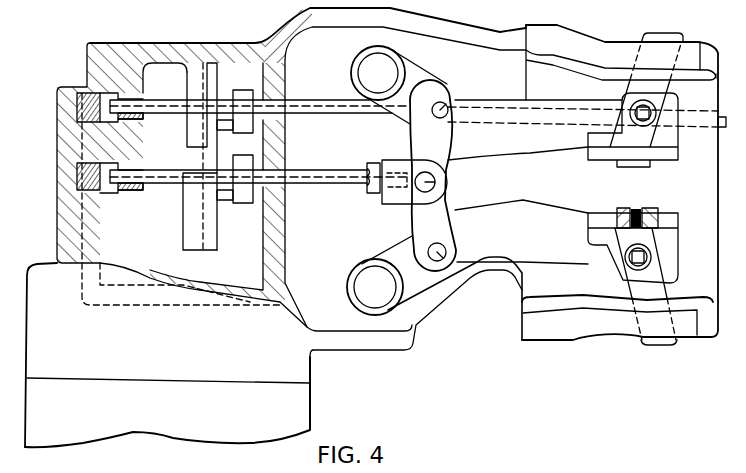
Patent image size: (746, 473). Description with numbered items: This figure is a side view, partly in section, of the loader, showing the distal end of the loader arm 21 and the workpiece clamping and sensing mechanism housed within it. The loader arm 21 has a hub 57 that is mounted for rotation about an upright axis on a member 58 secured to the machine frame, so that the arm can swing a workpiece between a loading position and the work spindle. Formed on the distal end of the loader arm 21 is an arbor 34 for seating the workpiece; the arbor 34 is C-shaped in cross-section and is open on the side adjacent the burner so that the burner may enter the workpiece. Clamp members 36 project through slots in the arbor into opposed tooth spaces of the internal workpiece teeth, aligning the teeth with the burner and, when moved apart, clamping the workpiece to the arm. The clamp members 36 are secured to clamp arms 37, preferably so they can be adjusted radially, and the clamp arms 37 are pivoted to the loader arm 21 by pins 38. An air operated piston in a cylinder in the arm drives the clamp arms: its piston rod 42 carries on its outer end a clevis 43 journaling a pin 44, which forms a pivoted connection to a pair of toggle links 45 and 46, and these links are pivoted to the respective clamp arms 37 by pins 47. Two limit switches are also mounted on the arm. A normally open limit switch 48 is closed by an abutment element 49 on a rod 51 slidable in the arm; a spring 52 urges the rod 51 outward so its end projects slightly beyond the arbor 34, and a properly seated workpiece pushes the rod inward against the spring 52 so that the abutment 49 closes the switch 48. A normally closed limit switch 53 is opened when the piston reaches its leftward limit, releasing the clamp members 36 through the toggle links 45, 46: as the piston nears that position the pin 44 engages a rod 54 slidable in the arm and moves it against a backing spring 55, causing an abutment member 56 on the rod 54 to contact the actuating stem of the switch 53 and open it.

The loader arm 21 is at (418, 323).
The arbor 34 is at (570, 339).
The clamp members 36 is at (670, 38).
The clamp arms 37 is at (541, 146).
The pins 38 is at (378, 73).
The piston rod 42 is at (375, 190).
The clevis 43 is at (402, 203).
The pin 44 is at (446, 183).
The toggle link 45 is at (420, 138).
The toggle link 46 is at (405, 239).
The pins 47 is at (446, 104).
The limit switch 48 is at (193, 141).
The abutment element 49 is at (240, 91).
The rod 51 is at (360, 113).
The spring 52 is at (86, 92).
The limit switch 53 is at (207, 245).
The rod 54 is at (327, 183).
The backing spring 55 is at (100, 190).
The abutment member 56 is at (240, 201).
The hub 57 is at (207, 350).
The member 58 is at (216, 413).